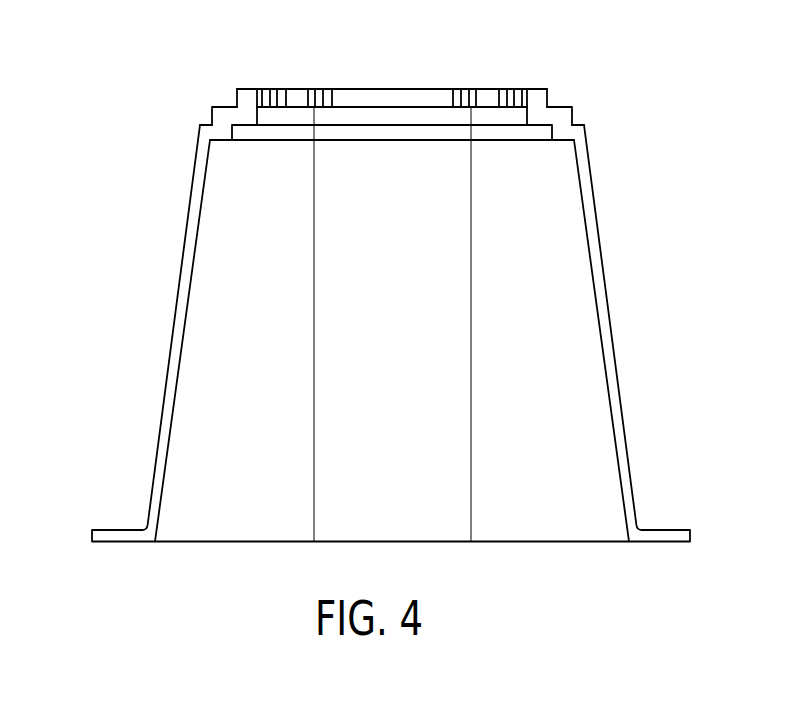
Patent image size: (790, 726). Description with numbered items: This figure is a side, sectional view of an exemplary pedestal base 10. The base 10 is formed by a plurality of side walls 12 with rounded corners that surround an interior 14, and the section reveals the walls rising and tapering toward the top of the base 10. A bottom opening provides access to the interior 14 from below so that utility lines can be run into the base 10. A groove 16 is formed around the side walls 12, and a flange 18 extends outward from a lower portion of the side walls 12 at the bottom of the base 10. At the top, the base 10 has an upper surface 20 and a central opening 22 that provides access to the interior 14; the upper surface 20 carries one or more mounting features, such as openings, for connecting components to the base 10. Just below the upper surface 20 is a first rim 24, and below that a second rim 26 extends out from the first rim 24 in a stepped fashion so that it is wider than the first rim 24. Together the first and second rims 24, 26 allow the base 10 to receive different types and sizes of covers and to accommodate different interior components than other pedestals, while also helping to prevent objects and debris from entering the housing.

The base 10 is at (104, 86).
The side walls 12 is at (182, 304).
The interior 14 is at (578, 353).
The groove 16 is at (191, 195).
The flange 18 is at (108, 538).
The upper surface 20 is at (252, 88).
The central opening 22 is at (383, 88).
The first rim 24 is at (561, 104).
The second rim 26 is at (577, 122).